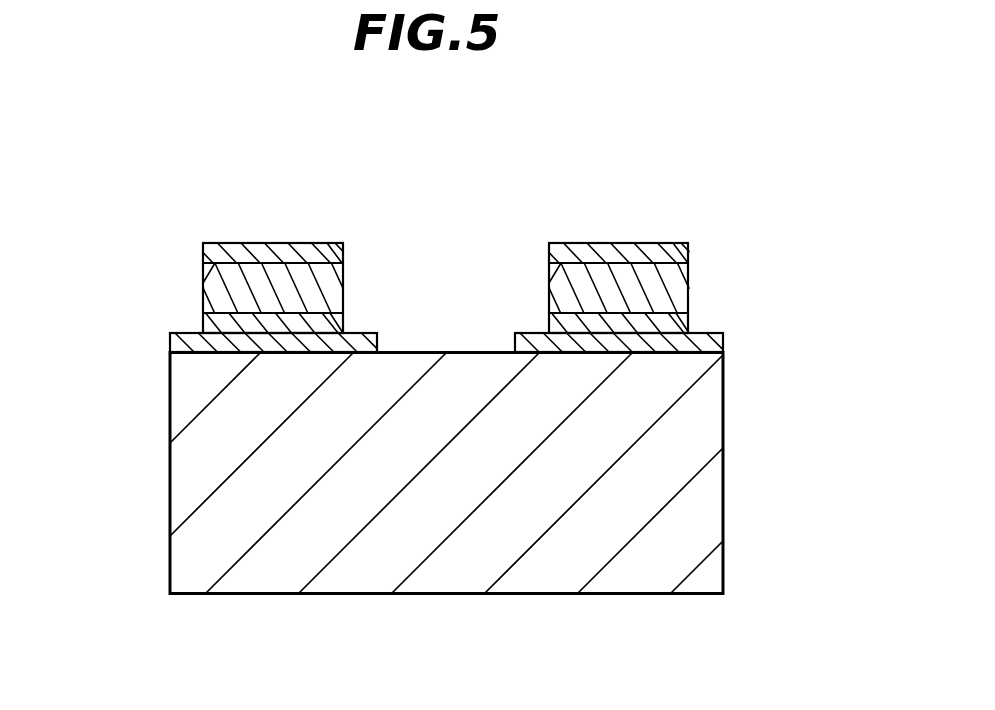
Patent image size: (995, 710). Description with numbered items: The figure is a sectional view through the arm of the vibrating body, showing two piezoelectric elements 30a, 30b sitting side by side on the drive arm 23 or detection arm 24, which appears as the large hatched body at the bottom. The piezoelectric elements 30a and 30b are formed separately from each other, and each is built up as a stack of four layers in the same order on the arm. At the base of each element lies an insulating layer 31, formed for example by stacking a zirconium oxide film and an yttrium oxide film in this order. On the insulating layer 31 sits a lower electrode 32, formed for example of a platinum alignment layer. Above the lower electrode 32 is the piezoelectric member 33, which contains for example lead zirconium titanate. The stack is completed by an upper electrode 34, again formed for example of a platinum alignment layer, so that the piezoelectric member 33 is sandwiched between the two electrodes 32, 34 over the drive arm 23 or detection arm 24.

The drive arm 23 is at (514, 473).
The detection arm 24 is at (700, 490).
The piezoelectric element 30a is at (72, 238).
The piezoelectric element 30b is at (816, 240).
The insulating layer 31 is at (173, 345).
The lower electrode 32 is at (203, 325).
The piezoelectric member 33 is at (203, 290).
The upper electrode 34 is at (203, 256).